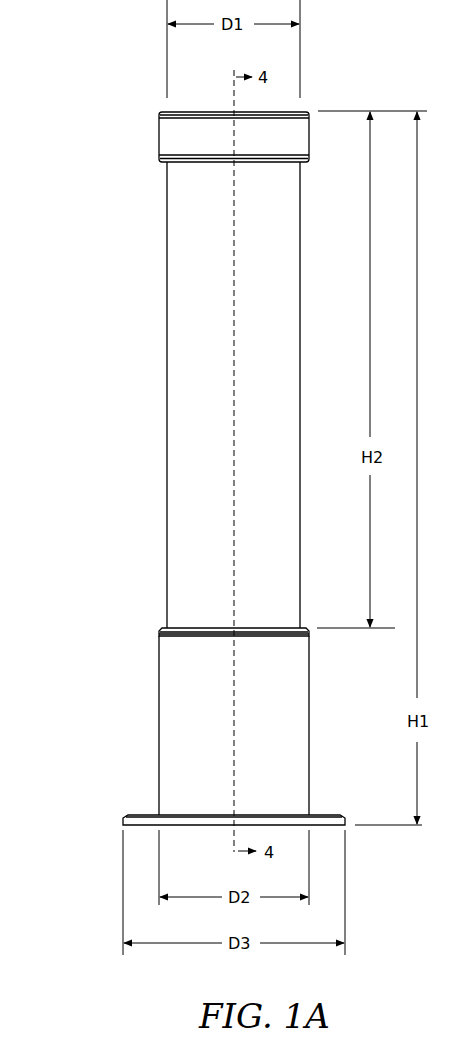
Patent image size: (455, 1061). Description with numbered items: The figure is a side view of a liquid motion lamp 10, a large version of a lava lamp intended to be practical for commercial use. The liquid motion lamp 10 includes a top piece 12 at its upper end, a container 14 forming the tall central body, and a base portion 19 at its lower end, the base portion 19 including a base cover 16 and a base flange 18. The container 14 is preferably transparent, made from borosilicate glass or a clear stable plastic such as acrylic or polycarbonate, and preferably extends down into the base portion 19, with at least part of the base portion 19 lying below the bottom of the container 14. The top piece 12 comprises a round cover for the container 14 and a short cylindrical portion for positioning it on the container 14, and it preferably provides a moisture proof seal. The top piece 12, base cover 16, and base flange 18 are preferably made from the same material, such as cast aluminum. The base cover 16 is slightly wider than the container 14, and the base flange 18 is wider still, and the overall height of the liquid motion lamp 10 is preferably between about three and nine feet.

The liquid motion lamp 10 is at (92, 170).
The top piece 12 is at (172, 146).
The container 14 is at (179, 521).
The base cover 16 is at (183, 653).
The base flange 18 is at (187, 818).
The base portion 19 is at (110, 630).